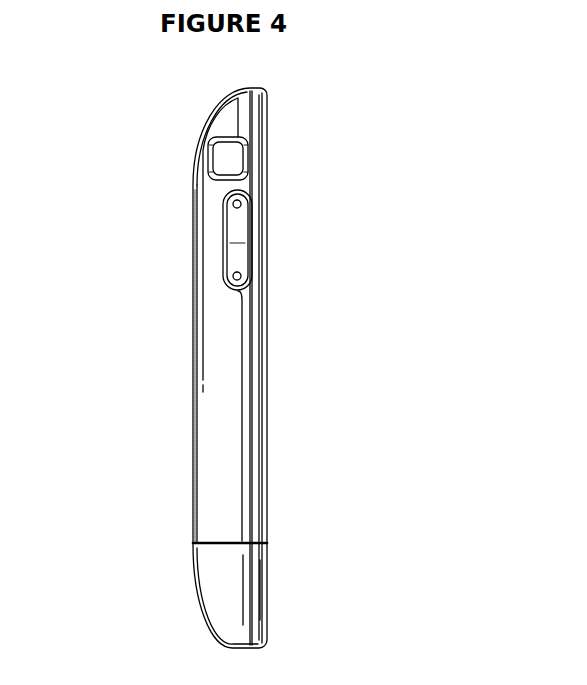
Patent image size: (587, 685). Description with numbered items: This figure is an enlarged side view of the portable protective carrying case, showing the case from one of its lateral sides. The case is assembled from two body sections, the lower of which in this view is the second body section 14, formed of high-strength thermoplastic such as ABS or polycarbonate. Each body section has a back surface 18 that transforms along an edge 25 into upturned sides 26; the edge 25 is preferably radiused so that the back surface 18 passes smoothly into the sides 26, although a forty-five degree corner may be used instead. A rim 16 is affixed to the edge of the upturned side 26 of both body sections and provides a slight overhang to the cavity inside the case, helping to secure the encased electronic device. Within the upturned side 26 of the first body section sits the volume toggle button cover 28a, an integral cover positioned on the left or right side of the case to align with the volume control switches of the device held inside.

The second body section 14 is at (212, 593).
The rim 16 is at (260, 493).
The back surface 18 is at (195, 260).
The edge 25 is at (250, 350).
The upturned sides 26 is at (205, 440).
The volume toggle button cover 28a is at (233, 243).